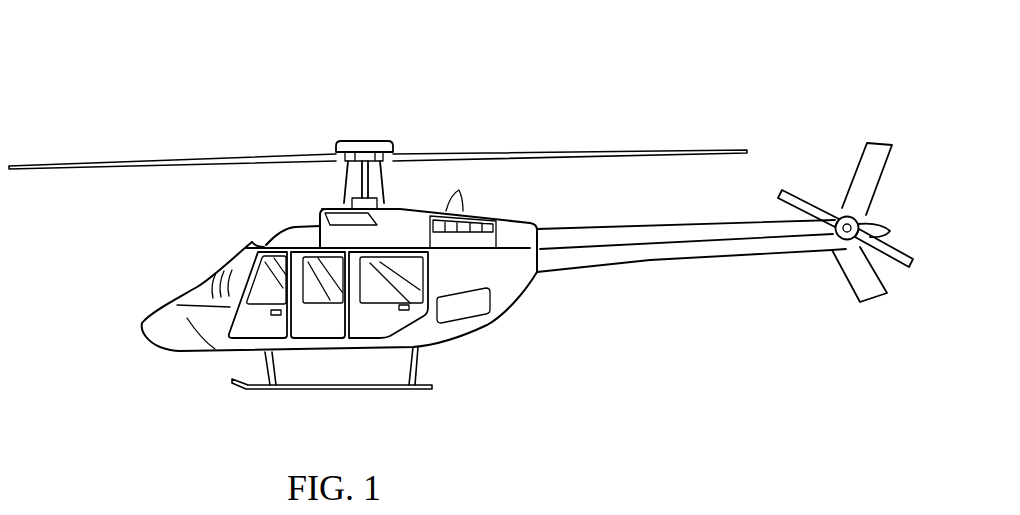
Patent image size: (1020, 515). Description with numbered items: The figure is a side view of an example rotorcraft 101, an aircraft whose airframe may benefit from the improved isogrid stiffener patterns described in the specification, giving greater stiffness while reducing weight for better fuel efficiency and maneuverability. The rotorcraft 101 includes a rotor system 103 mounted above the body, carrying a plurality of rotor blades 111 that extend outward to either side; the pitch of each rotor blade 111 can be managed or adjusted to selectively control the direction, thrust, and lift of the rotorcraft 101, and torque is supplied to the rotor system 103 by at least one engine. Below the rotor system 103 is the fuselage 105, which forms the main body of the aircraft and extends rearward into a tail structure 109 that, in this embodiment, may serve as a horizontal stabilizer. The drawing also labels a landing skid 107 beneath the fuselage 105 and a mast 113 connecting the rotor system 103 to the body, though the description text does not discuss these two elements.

The rotorcraft 101 is at (189, 71).
The rotor system 103 is at (345, 128).
The fuselage 105 is at (180, 349).
The landing gear (skid) 107 is at (340, 389).
The tail structure 109 is at (659, 264).
The rotor blades 111 is at (558, 150).
The rotor mast 113 is at (345, 192).